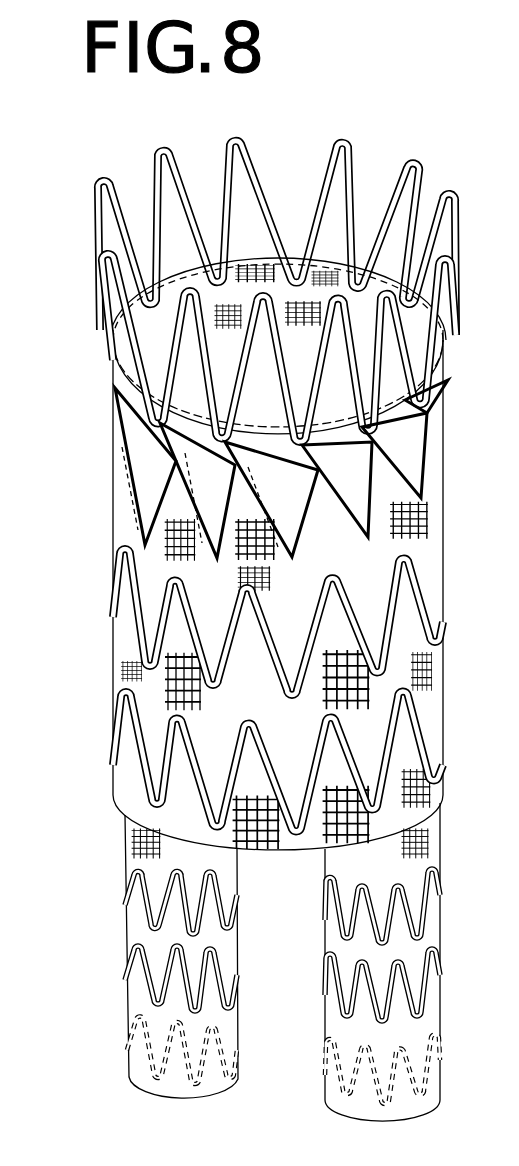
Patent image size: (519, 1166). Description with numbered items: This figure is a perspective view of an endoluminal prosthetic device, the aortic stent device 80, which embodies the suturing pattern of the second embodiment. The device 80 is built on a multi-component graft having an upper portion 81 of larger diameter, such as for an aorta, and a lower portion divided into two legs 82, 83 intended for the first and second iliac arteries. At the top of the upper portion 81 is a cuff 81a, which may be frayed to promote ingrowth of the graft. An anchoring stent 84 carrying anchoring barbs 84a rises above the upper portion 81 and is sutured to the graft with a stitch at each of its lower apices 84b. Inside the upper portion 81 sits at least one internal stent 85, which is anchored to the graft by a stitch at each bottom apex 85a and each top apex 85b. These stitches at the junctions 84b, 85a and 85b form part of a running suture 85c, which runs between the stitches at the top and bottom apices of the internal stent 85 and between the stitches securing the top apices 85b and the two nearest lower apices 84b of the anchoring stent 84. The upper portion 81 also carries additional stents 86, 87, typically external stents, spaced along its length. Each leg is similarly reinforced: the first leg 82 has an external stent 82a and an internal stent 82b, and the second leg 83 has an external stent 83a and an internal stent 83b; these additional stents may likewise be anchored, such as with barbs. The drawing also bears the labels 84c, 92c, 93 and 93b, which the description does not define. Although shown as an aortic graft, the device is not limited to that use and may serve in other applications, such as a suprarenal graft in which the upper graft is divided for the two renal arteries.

The aortic stent device 80 is at (417, 136).
The upper portion 81 is at (443, 530).
The cuff 81a is at (112, 392).
The leg 82 is at (238, 882).
The external stent 82a is at (236, 969).
The internal stent 82b is at (244, 1052).
The leg 83 is at (440, 838).
The external stent 83a is at (441, 966).
The internal stent 83b is at (443, 1056).
The anchoring stent 84 is at (448, 258).
The anchoring barbs 84a is at (450, 240).
The lower apices 84b is at (418, 386).
The crown stent attachment 84c is at (418, 433).
The internal stent 85 is at (111, 450).
The bottom apex 85a is at (147, 547).
The top apex 85b is at (112, 430).
The running suture 85c is at (347, 512).
The additional stent 86 is at (440, 586).
The additional stent 87 is at (435, 704).
The connector 92c is at (470, 620).
The connector 93 is at (490, 715).
The connector 93b is at (471, 660).